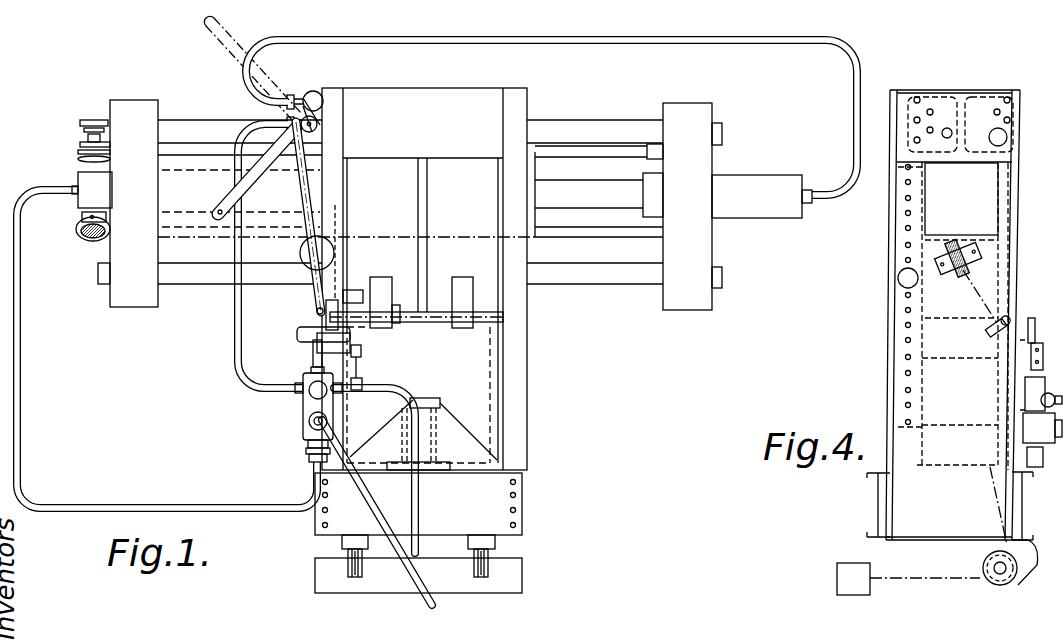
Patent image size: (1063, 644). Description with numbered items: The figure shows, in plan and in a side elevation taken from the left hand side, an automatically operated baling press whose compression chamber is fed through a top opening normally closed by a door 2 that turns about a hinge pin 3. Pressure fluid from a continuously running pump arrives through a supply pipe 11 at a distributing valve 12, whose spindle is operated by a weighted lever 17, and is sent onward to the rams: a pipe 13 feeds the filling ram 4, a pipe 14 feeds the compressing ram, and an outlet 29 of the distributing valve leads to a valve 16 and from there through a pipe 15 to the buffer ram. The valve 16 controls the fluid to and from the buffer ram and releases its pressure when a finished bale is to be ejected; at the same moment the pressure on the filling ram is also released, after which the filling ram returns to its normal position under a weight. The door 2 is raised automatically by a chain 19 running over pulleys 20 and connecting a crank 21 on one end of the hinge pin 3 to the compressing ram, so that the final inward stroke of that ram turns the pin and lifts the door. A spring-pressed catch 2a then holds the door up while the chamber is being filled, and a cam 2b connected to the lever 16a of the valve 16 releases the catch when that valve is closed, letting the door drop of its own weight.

In FIG. 1, the door 2 is at (455, 332).
In FIG. 1, the catch 2a is at (350, 290).
In FIG. 1, the cam 2b is at (374, 307).
In FIG. 1, the hinge pin 3 is at (440, 320).
In FIG. 1, the filling ram 4 is at (433, 410).
In FIG. 1, the supply pipe 11 is at (425, 598).
In FIG. 1, the distributing valve 12 is at (306, 447).
In FIG. 4, the distributing valve 12 is at (1041, 402).
In FIG. 1, the pipe 13 is at (398, 392).
In FIG. 1, the pipe 14 is at (213, 508).
In FIG. 1, the pipe 15 is at (616, 38).
In FIG. 1, the valve 16 is at (308, 92).
In FIG. 1, the lever 16a is at (272, 172).
In FIG. 1, the weighted lever 17 is at (512, 572).
In FIG. 4, the weighted lever 17 is at (837, 578).
In FIG. 1, the chain 19 is at (304, 217).
In FIG. 1, the pulleys 20 is at (82, 128).
In FIG. 4, the pulleys 20 is at (945, 276).
In FIG. 1, the crank 21 is at (317, 312).
In FIG. 4, the crank 21 is at (990, 330).
In FIG. 1, the outlet 29 is at (303, 400).